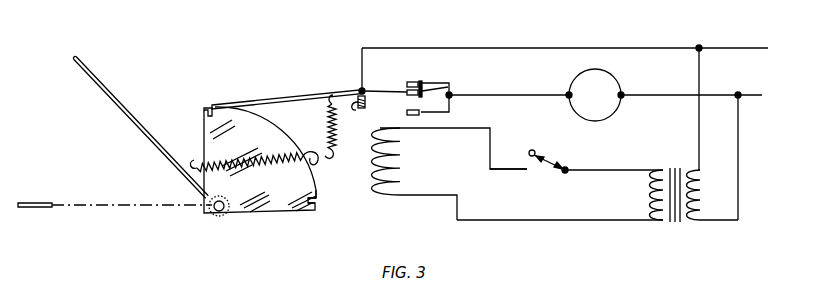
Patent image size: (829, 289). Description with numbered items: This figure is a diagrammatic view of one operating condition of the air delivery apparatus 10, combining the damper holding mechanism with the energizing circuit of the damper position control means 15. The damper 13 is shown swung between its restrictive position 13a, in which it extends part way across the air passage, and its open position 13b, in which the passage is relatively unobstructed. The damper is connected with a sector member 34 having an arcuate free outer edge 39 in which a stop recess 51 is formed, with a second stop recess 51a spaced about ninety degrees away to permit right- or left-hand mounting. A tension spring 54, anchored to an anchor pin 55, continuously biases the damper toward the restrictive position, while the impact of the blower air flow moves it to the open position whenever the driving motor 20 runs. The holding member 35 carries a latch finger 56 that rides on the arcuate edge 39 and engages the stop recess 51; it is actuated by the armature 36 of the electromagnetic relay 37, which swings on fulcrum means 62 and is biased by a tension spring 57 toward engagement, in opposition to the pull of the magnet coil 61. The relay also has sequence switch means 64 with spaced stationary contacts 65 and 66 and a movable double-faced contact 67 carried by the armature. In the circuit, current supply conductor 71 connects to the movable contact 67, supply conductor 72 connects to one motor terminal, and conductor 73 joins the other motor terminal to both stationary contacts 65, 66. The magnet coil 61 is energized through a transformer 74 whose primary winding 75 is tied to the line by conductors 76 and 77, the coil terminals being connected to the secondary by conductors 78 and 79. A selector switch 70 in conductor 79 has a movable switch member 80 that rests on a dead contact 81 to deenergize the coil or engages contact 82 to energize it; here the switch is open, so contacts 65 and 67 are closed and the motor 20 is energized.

The air delivery apparatus 10 is at (456, 36).
The damper 13 is at (133, 122).
The restrictive position 13a is at (110, 98).
The open position 13b is at (53, 208).
The damper position control means 15 is at (487, 196).
The driving motor 20 is at (612, 85).
The sector member 34 is at (204, 130).
The holding member 35 is at (258, 104).
The armature 36 is at (372, 90).
The electromagnetic relay 37 is at (415, 75).
The arcuate edge 39 is at (318, 192).
The stop recess 51 is at (203, 112).
The second stop recess 51a is at (318, 201).
The tension spring 54 is at (268, 143).
The anchor pin 55 is at (306, 160).
The latch finger 56 is at (207, 108).
The tension spring 57 is at (330, 125).
The magnet coil 61 is at (405, 162).
The fulcrum means 62 is at (362, 108).
The sequence switch means 64 is at (407, 99).
The stationary switch contact 65 is at (420, 82).
The stationary switch contact 66 is at (416, 117).
The movable double-faced contact 67 is at (451, 93).
The selector switch 70 is at (562, 165).
The current supply conductor 71 is at (701, 46).
The current supply conductor 72 is at (726, 92).
The conductor 73 is at (485, 95).
The transformer 74 is at (656, 206).
The primary winding 75 is at (700, 200).
The conductor 76 is at (698, 128).
The conductor 77 is at (740, 128).
The conductor 78 is at (527, 222).
The conductor 79 is at (586, 172).
The movable switch member 80 is at (548, 158).
The dead contact 81 is at (532, 150).
The contact 82 is at (527, 172).